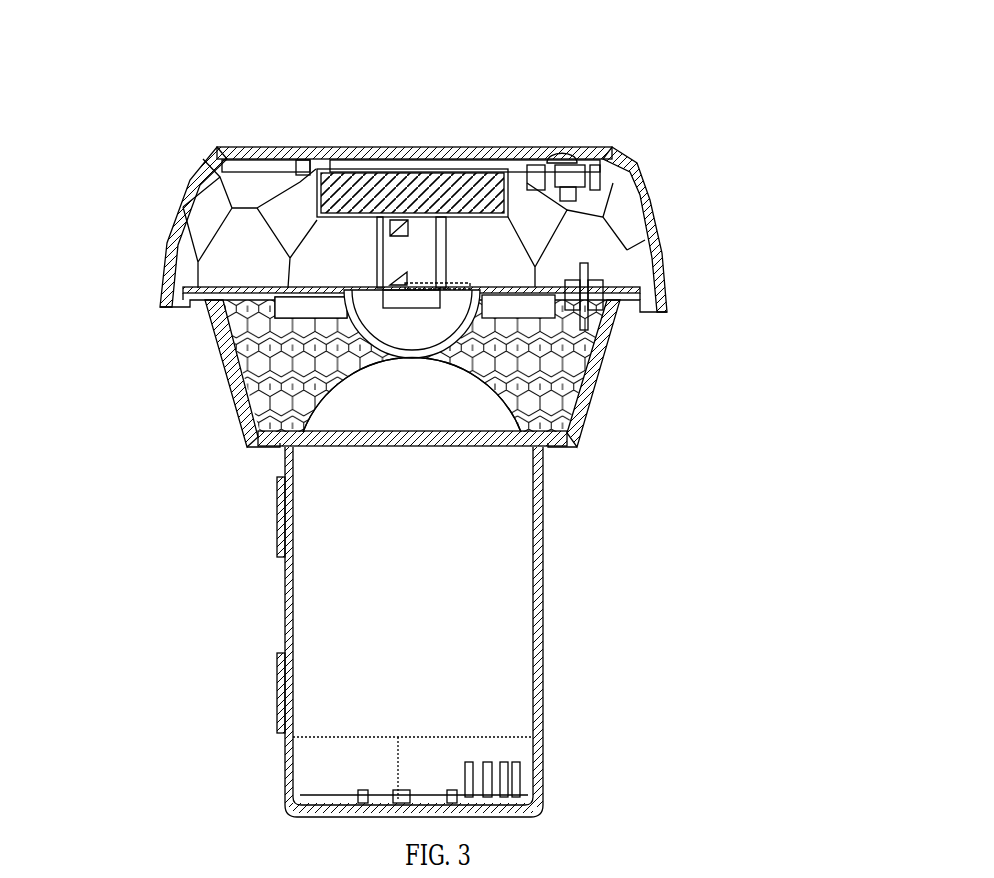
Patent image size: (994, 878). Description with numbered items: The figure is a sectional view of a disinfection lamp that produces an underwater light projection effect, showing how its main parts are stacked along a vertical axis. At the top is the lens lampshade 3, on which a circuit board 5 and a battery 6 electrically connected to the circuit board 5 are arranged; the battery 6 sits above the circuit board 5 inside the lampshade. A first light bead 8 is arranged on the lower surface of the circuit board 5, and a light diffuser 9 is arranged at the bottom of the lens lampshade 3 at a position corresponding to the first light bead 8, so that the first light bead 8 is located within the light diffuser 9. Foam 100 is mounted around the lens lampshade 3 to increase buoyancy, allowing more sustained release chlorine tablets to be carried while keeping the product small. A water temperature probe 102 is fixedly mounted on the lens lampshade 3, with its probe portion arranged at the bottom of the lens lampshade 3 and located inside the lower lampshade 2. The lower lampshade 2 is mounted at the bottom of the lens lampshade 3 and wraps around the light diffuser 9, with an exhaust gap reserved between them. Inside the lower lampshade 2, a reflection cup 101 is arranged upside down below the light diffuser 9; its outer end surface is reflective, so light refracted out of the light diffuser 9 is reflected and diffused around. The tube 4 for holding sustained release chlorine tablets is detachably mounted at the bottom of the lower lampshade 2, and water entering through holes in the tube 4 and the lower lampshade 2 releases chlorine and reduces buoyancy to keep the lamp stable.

The lower lampshade 2 is at (230, 428).
The lens lampshade 3 is at (660, 310).
The tube 4 is at (503, 633).
The circuit board 5 is at (455, 278).
The battery 6 is at (322, 200).
The first light bead 8 is at (432, 320).
The light diffuser 9 is at (373, 345).
The foam 100 is at (273, 308).
The reflection cup 101 is at (367, 413).
The water temperature probe 102 is at (607, 277).